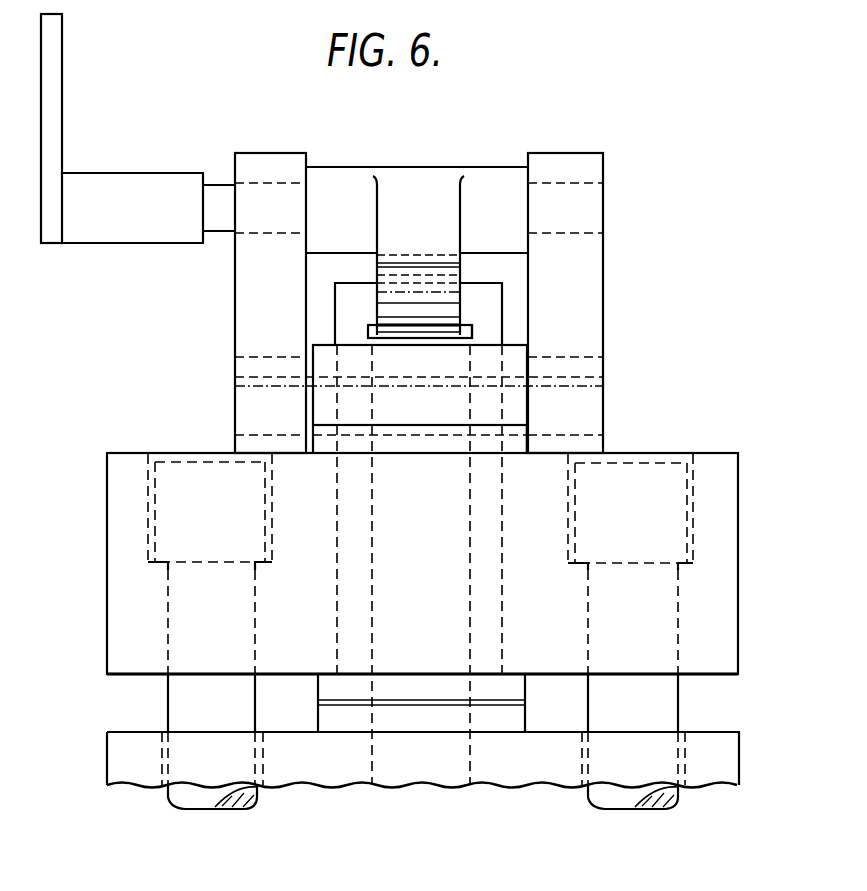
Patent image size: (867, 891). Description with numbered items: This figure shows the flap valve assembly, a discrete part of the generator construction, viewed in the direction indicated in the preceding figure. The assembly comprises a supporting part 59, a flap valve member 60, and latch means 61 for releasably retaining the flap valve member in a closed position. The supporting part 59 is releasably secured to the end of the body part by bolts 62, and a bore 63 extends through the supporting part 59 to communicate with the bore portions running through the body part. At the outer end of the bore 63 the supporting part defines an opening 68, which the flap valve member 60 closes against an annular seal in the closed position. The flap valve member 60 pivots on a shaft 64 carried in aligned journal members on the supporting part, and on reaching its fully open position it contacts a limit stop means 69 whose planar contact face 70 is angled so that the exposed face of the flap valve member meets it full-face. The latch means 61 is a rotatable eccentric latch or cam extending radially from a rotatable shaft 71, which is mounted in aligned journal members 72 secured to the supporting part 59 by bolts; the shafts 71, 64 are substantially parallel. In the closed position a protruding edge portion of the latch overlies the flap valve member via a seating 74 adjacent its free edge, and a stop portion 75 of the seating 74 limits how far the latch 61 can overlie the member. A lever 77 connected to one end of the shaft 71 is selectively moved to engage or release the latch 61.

The supporting part 59 is at (125, 597).
The flap valve member 60 is at (327, 355).
The latch means 61 is at (397, 283).
The bolts 62 is at (256, 635).
The bore 63 is at (470, 606).
The shaft 64 is at (578, 384).
The opening 68 is at (468, 449).
The limit stop means 69 is at (338, 590).
The planar contact face 70 is at (492, 298).
The rotatable shaft 71 is at (555, 185).
The journal members 72 is at (253, 165).
The seating 74 is at (447, 343).
The stop portion 75 is at (367, 332).
The lever 77 is at (56, 65).